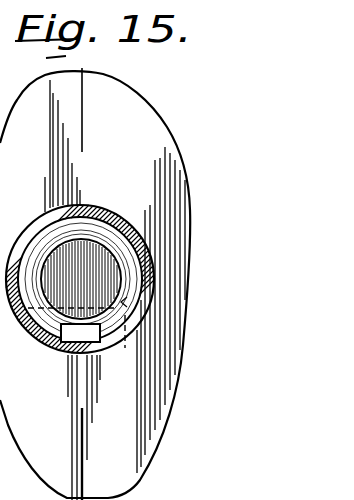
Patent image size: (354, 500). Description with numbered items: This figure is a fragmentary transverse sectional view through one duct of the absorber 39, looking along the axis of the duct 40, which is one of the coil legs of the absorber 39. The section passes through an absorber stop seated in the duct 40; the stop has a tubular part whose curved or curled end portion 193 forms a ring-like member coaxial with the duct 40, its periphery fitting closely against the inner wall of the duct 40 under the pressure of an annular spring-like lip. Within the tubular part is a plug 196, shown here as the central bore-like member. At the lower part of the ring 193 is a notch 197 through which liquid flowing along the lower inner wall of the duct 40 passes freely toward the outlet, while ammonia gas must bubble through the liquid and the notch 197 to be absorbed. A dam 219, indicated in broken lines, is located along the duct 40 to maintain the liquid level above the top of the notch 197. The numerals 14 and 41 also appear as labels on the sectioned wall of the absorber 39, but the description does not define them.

The width dimension 14 is at (53, 470).
The absorber 39 is at (207, 143).
The web portion 41 is at (128, 171).
The duct 40 is at (34, 333).
The plug 196 is at (102, 283).
The curled end portion 193 is at (124, 301).
The dam 219 is at (87, 343).
The notch 197 is at (88, 336).